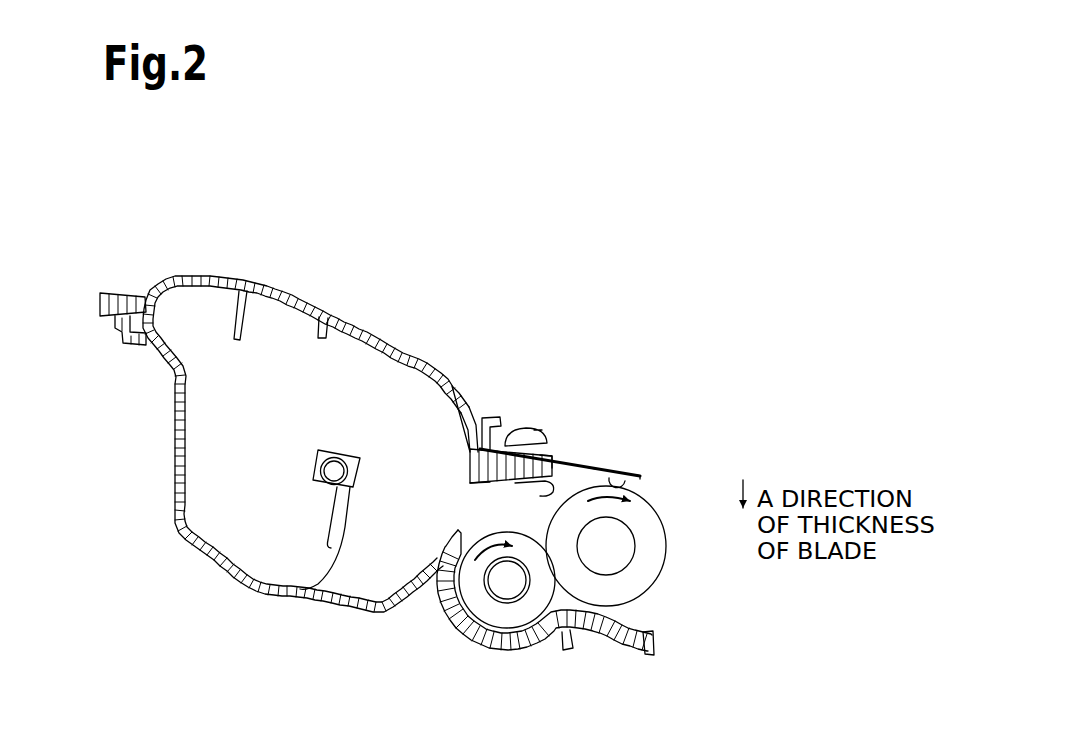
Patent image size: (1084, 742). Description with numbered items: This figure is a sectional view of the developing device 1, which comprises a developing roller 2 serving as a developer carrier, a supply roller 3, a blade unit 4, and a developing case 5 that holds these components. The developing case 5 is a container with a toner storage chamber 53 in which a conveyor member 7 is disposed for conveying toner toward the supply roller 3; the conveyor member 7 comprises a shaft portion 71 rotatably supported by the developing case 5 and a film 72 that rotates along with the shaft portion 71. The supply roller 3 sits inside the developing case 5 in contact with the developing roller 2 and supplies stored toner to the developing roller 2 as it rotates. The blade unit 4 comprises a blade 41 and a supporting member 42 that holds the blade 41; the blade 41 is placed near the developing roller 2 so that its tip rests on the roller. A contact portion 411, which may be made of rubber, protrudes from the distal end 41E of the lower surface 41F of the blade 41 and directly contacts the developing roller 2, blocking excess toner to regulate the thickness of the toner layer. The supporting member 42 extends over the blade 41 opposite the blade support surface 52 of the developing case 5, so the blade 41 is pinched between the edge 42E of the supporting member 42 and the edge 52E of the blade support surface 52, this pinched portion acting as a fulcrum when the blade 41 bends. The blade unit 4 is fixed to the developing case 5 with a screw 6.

The developing device 1 is at (330, 248).
The developing roller 2 is at (658, 578).
The supply roller 3 is at (507, 615).
The blade unit 4 is at (533, 412).
The blade 41 is at (571, 462).
The contact portion 411 is at (640, 478).
The distal end 41E is at (630, 477).
The lower surface 41F is at (590, 470).
The supporting member 42 is at (463, 456).
The edge of the supporting member 42E is at (553, 462).
The developing case 5 is at (167, 272).
The blade support surface 52 is at (480, 477).
The edge of the support surface 52E is at (548, 488).
The toner storage chamber 53 is at (247, 401).
The screw 6 is at (513, 428).
The conveyor member 7 is at (313, 498).
The shaft portion 71 is at (322, 469).
The film 72 is at (335, 572).